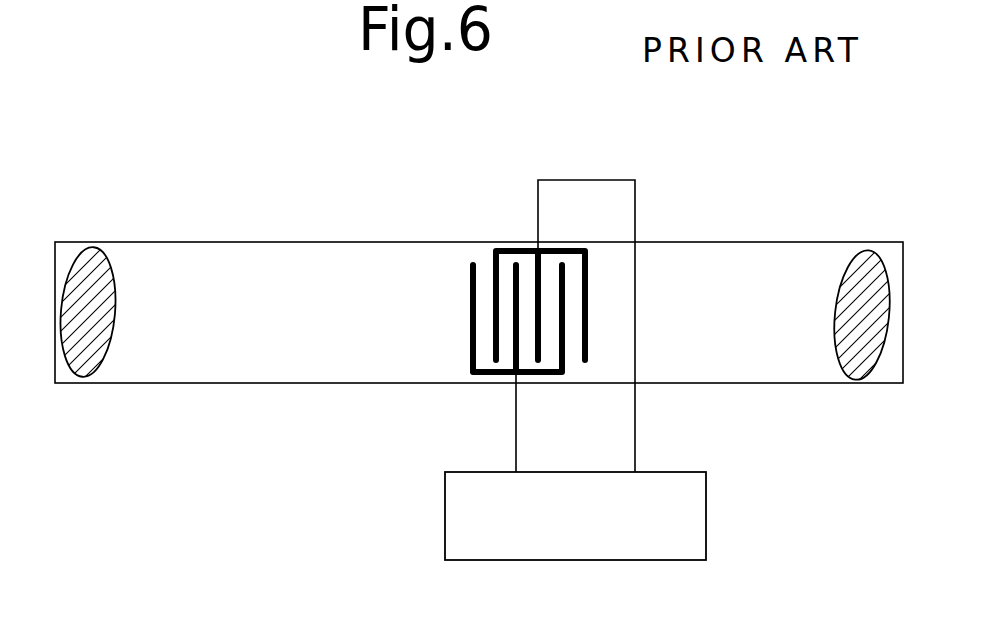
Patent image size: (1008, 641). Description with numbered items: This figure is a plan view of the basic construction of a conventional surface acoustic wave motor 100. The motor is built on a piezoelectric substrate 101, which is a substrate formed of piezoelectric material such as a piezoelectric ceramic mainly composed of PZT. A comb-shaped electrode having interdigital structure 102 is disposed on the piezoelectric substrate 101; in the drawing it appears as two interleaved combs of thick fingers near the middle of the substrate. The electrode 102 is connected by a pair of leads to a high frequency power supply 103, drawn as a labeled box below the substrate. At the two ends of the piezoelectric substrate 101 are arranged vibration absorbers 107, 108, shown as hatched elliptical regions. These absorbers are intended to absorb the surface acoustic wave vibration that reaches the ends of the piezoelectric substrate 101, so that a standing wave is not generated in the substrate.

The surface acoustic wave motor 100 is at (305, 438).
The piezoelectric substrate 101 is at (780, 290).
The comb-shaped electrode having interdigital structure 102 is at (468, 288).
The high frequency power supply 103 is at (708, 537).
The vibration absorber 107 is at (842, 365).
The vibration absorber 108 is at (88, 367).